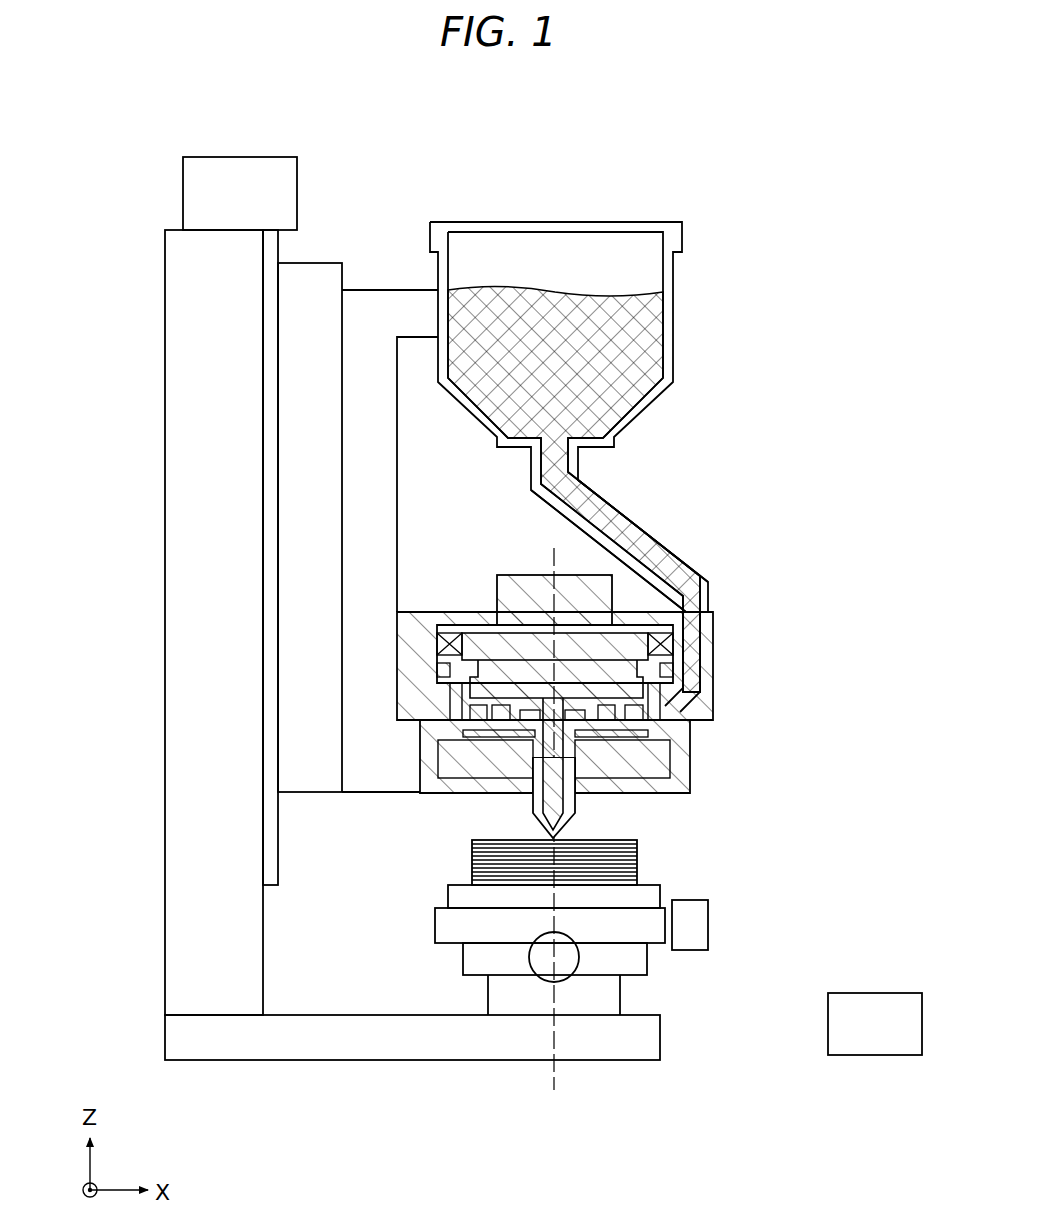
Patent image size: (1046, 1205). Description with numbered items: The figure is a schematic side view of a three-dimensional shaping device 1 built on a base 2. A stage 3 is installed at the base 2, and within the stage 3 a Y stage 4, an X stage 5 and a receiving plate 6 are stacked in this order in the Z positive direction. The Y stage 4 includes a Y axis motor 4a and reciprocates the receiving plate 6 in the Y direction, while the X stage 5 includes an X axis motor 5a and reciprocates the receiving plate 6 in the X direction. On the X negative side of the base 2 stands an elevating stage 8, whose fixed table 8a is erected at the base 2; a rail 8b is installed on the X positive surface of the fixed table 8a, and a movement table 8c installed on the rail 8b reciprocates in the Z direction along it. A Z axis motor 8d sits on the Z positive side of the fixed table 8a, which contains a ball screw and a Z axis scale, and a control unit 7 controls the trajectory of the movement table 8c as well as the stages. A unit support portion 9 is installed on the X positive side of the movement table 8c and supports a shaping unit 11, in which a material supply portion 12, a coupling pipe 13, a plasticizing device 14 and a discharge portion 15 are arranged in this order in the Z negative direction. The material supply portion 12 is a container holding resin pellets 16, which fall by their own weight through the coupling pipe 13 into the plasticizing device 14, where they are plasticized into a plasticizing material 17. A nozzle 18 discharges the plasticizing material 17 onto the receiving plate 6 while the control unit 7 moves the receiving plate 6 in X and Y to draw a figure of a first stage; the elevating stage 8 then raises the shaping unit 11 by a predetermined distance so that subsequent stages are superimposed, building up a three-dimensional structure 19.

The three-dimensional shaping device 1 is at (778, 130).
The base 2 is at (640, 1060).
The stage 3 is at (631, 950).
The Y stage 4 is at (640, 958).
The Y axis motor 4a is at (572, 962).
The X stage 5 is at (668, 930).
The X axis motor 5a is at (692, 920).
The receiving plate 6 is at (660, 888).
The control unit 7 is at (884, 1055).
The elevating stage 8 is at (216, 548).
The fixed table 8a is at (170, 415).
The rail 8b is at (280, 875).
The movement table 8c is at (322, 793).
The Z axis motor 8d is at (183, 186).
The unit support portion 9 is at (376, 304).
The shaping unit 11 is at (892, 210).
The material supply portion 12 is at (678, 268).
The coupling pipe 13 is at (635, 520).
The plasticizing device 14 is at (800, 575).
The discharge portion 15 is at (800, 768).
The resin pellets 16 is at (655, 345).
The plasticizing material 17 is at (655, 740).
The nozzle 18 is at (578, 803).
The three-dimensional structure 19 is at (628, 850).